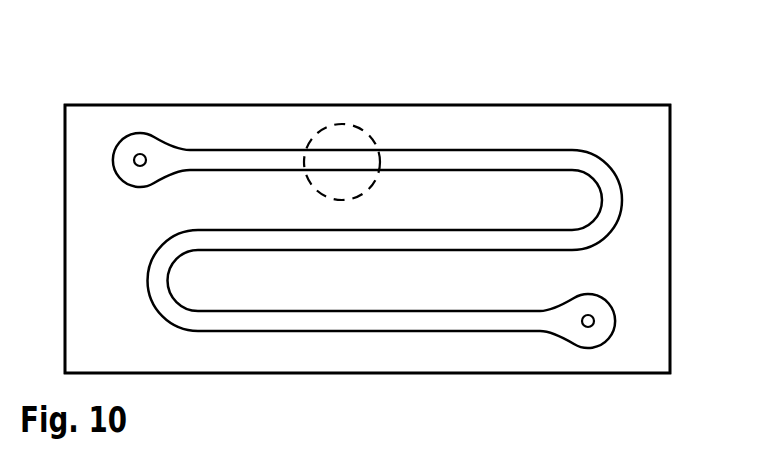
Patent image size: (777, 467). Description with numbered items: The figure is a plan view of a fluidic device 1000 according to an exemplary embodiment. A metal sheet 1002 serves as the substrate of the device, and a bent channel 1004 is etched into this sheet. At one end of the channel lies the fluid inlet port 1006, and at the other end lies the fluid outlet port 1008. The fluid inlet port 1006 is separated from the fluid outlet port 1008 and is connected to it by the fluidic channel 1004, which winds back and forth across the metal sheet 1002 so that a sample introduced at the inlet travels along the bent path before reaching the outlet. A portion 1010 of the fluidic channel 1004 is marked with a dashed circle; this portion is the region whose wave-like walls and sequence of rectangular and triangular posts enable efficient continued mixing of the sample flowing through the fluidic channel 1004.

The fluidic device 1000 is at (622, 85).
The metal sheet 1002 is at (492, 115).
The bent channel 1004 is at (228, 162).
The fluid inlet port 1006 is at (138, 145).
The fluid outlet port 1008 is at (593, 308).
The portion of the fluidic channel 1010 is at (363, 128).